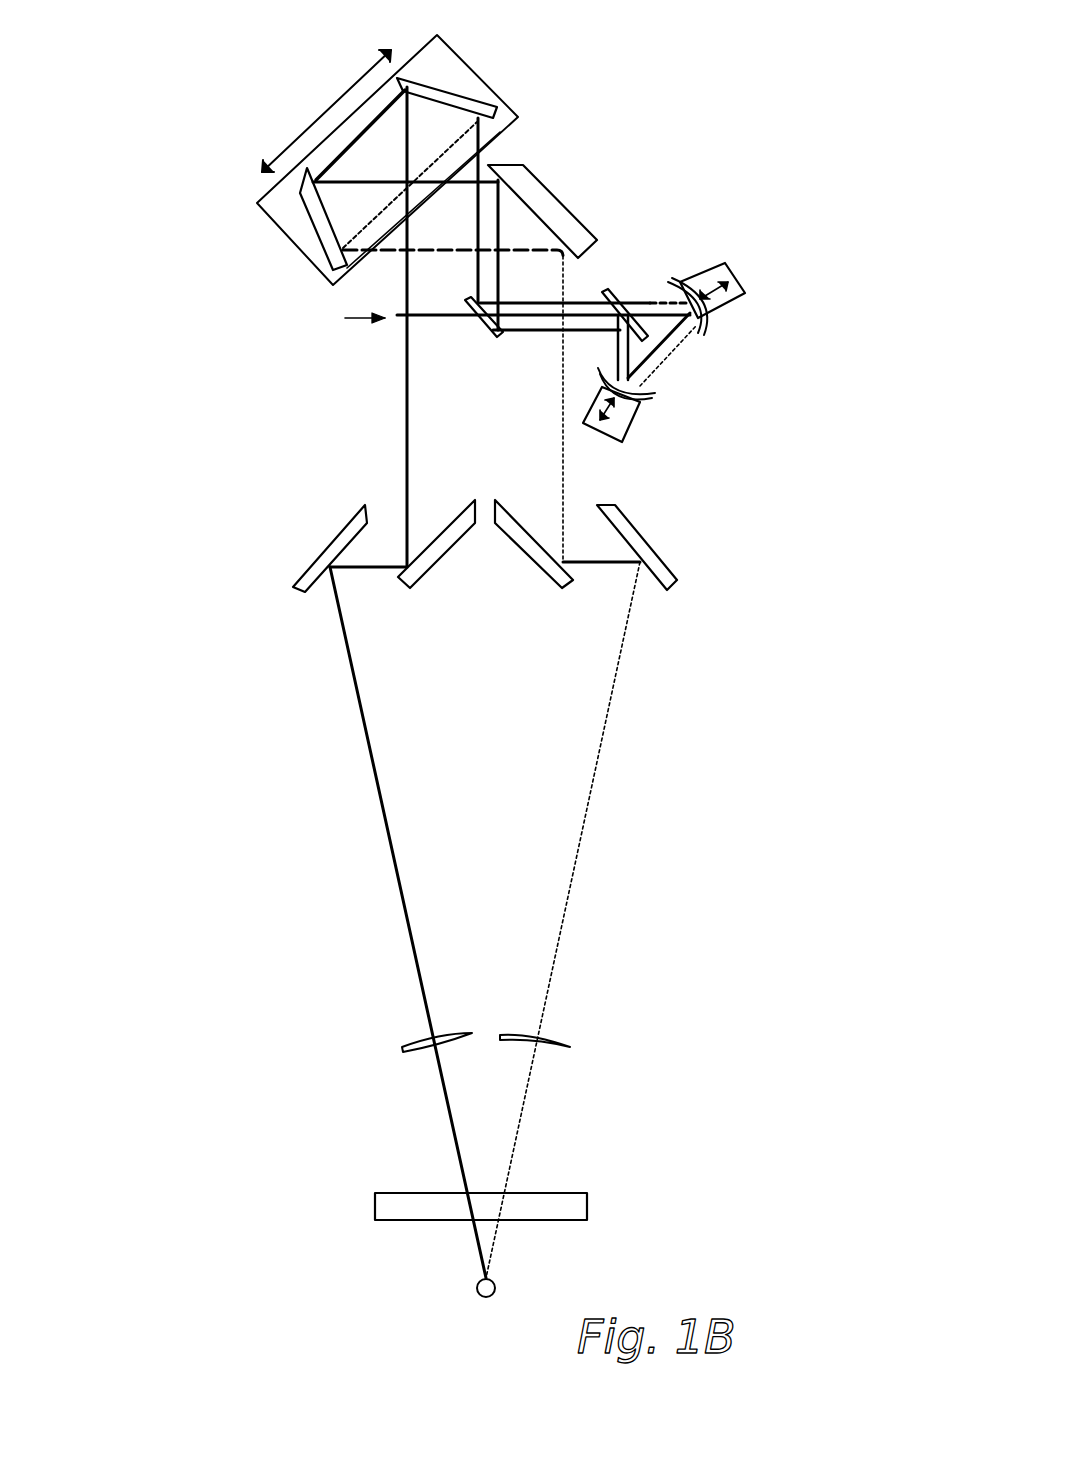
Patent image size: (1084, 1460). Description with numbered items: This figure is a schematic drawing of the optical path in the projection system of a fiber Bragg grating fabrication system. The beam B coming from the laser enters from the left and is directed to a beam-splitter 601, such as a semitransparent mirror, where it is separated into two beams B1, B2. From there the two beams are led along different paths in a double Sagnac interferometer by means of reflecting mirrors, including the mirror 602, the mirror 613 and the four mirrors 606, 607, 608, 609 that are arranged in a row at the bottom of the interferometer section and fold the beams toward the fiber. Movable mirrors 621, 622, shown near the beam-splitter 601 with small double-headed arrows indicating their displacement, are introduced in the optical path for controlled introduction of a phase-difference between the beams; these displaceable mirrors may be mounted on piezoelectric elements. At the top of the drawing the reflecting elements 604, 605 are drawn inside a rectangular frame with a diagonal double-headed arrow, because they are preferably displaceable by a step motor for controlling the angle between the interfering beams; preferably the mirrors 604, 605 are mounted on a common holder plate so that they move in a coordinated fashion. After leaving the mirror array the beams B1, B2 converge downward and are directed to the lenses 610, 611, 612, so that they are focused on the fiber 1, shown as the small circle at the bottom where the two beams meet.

The reflecting element 604 is at (440, 88).
The reflecting element 605 is at (313, 228).
The reflecting mirror 613 is at (537, 193).
The beam-splitter 601 is at (600, 290).
The reflecting mirror 602 is at (487, 328).
The movable mirror 621 is at (623, 415).
The movable mirror 622 is at (718, 293).
The beam B is at (397, 315).
The beam B1 is at (617, 350).
The beam B2 is at (657, 303).
The reflecting mirror 606 is at (296, 587).
The reflecting mirror 607 is at (425, 565).
The reflecting mirror 608 is at (557, 572).
The reflecting mirror 609 is at (675, 588).
The lens 610 is at (570, 1205).
The lens 611 is at (415, 1053).
The lens 612 is at (573, 1050).
The fiber 1 is at (475, 1295).